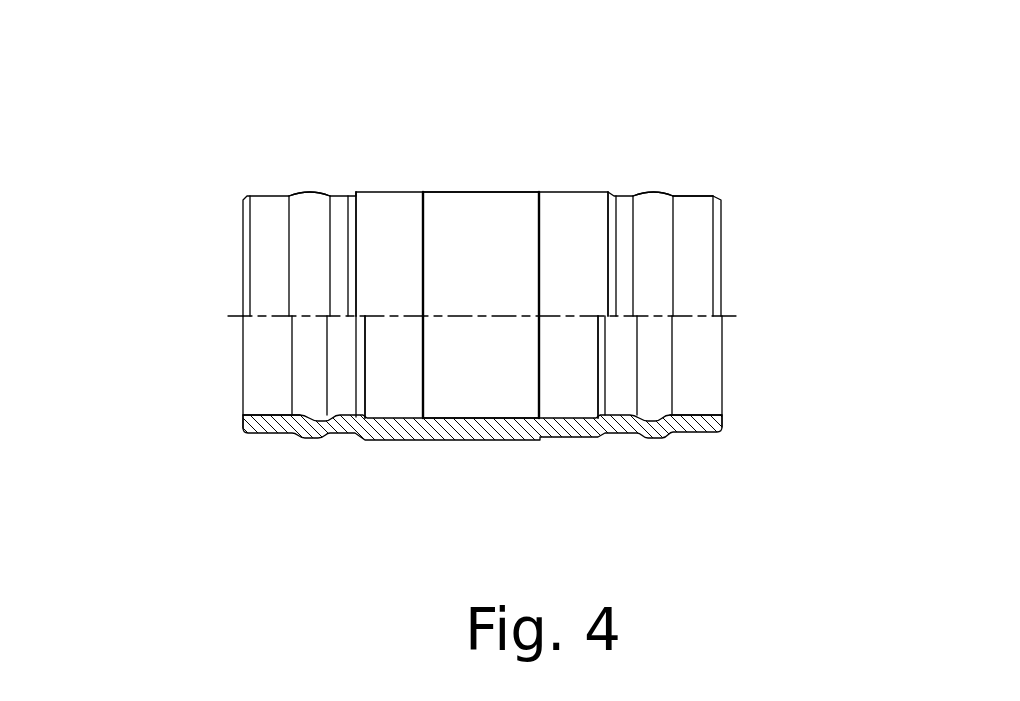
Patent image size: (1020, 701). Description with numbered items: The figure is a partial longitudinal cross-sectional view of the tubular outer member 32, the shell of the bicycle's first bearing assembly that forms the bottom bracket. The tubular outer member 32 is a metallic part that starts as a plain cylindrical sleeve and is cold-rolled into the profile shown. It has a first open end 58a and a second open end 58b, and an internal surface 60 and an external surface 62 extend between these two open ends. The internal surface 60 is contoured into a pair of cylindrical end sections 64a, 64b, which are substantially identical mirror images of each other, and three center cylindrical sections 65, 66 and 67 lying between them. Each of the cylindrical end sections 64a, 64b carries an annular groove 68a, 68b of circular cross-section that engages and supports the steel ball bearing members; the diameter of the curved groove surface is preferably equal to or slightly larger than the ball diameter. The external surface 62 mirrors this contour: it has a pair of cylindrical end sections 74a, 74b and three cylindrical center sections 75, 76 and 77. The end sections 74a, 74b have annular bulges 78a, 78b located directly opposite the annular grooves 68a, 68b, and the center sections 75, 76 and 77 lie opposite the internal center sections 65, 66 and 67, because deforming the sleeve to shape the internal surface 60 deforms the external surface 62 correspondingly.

The tubular outer member 32 is at (583, 159).
The internal surface 60 is at (482, 399).
The external surface 62 is at (390, 440).
The cylindrical end section 64a is at (270, 412).
The cylindrical end section 64b is at (697, 412).
The center cylindrical section 65 is at (372, 417).
The center cylindrical section 66 is at (437, 417).
The center cylindrical section 67 is at (548, 412).
The annular groove 68a is at (307, 418).
The annular groove 68b is at (653, 418).
The cylindrical end section 74a is at (270, 220).
The cylindrical end section 74b is at (707, 195).
The cylindrical center section 75 is at (390, 190).
The cylindrical center section 76 is at (503, 191).
The cylindrical center section 77 is at (573, 191).
The annular bulge 78a is at (313, 210).
The annular bulge 78b is at (653, 193).
The first open end 58a is at (242, 290).
The second open end 58b is at (722, 290).